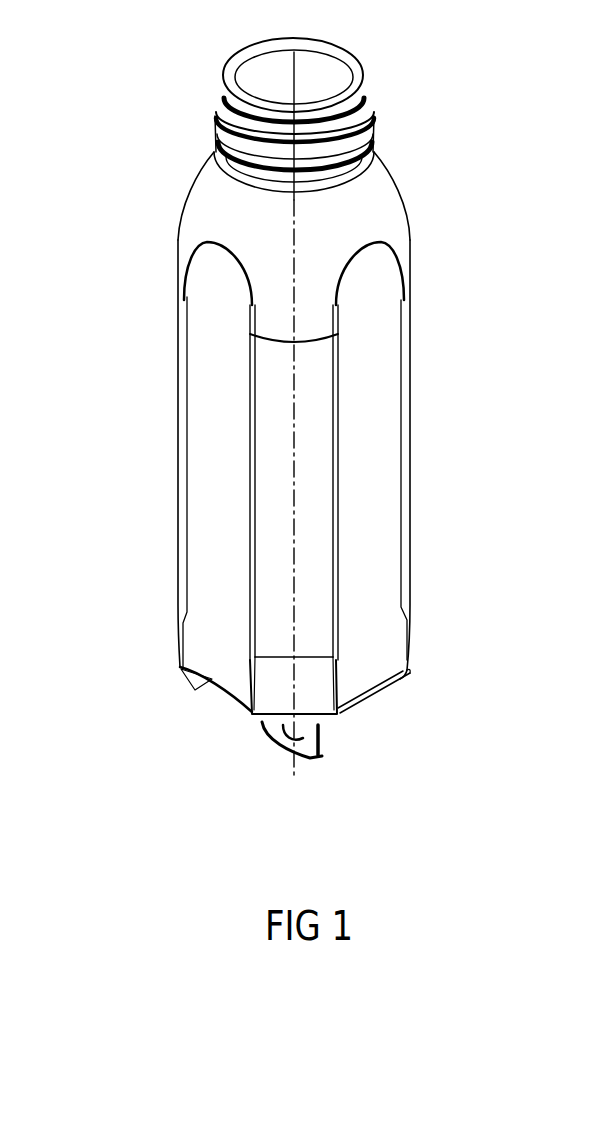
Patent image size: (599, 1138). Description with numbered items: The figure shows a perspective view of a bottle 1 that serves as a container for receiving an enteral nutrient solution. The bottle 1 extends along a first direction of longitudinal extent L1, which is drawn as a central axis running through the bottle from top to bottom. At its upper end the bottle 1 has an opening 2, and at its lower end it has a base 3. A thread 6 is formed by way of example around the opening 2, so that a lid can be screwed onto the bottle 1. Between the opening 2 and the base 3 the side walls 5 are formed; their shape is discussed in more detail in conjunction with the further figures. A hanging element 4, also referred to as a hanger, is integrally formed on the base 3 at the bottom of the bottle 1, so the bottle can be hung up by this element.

The bottle 1 is at (155, 373).
The opening 2 is at (313, 72).
The base 3 is at (370, 701).
The hanging element 4 is at (275, 730).
The side walls 5 is at (424, 668).
The thread 6 is at (365, 101).
The first direction of longitudinal extent L1 is at (296, 767).